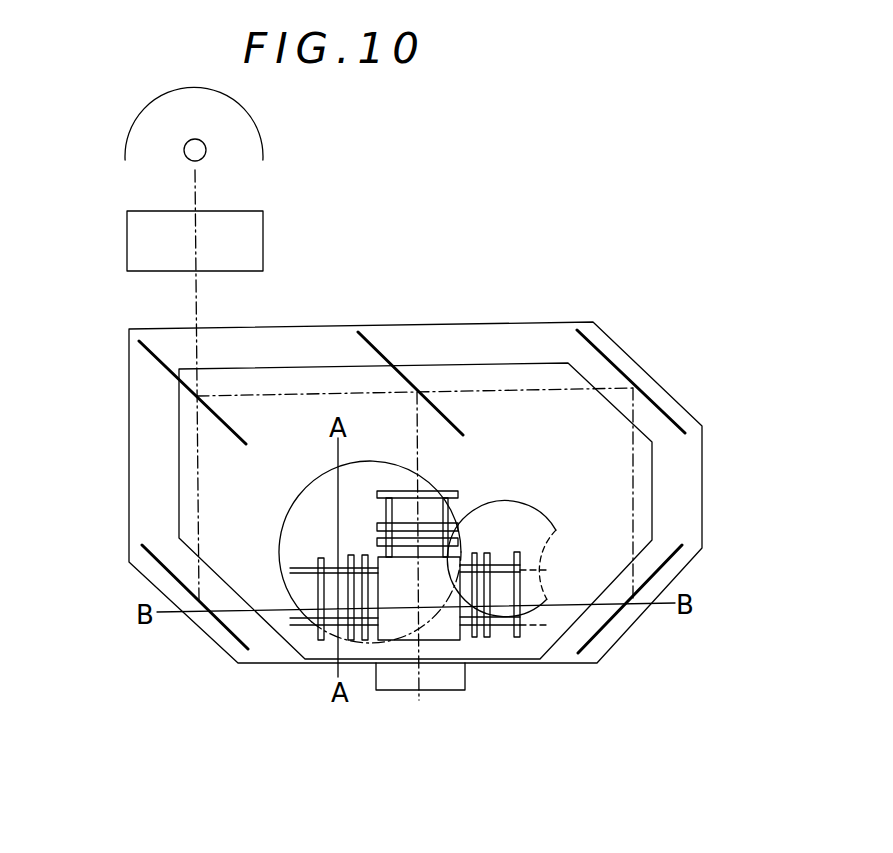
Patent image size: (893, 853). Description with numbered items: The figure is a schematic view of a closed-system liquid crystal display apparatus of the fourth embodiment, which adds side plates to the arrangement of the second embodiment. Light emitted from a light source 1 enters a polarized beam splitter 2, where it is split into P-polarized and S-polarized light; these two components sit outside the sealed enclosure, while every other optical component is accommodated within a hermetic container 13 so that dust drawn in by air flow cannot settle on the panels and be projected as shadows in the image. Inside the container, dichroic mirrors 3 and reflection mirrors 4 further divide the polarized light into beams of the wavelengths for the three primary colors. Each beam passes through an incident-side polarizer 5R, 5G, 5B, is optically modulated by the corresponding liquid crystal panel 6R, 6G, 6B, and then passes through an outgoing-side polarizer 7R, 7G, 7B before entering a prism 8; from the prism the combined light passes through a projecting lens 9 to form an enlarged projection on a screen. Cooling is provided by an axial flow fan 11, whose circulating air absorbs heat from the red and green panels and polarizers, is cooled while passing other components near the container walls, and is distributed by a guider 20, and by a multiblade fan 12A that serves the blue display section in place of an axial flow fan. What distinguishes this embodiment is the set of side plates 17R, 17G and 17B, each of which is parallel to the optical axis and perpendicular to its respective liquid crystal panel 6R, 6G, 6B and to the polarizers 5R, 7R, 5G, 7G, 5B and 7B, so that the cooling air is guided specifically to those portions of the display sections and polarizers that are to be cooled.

The light source 1 is at (235, 138).
The polarized beam splitter 2 is at (248, 230).
The dichroic mirror 3 is at (392, 365).
The reflection mirror 4 is at (640, 388).
The guider 20 is at (653, 492).
The hermetic container 13 is at (190, 620).
The axial flow fan 11 is at (292, 511).
The multiblade fan 12A is at (600, 506).
The prism 8 is at (453, 562).
The projecting lens 9 is at (450, 682).
The incident-side polarizer for green 5G is at (455, 494).
The liquid crystal panel for green 6G is at (462, 527).
The outgoing-side polarizer for green 7G is at (380, 540).
The side plate for green 17G is at (380, 515).
The incident-side polarizer for red 5R is at (317, 641).
The liquid crystal panel for red 6R is at (353, 641).
The outgoing-side polarizer for red 7R is at (368, 641).
The side plate for red 17R is at (318, 572).
The incident-side polarizer for blue 5B is at (519, 638).
The liquid crystal panel for blue 6B is at (488, 640).
The outgoing-side polarizer for blue 7B is at (475, 640).
The side plate for blue 17B is at (498, 555).